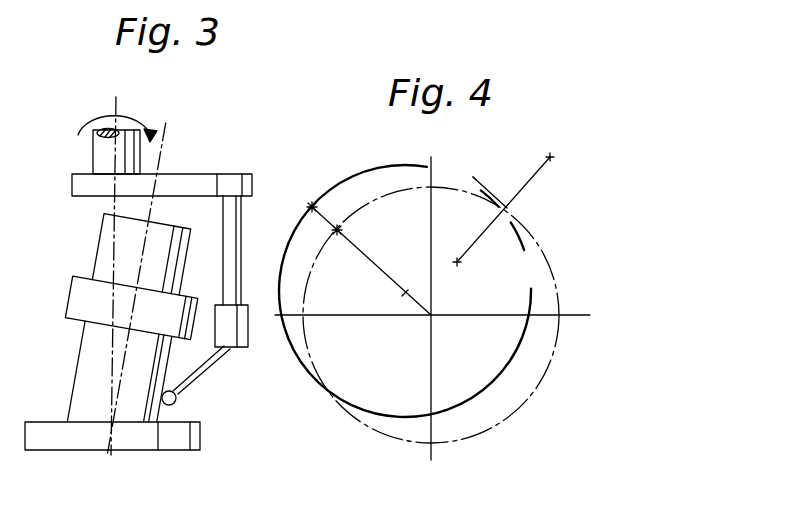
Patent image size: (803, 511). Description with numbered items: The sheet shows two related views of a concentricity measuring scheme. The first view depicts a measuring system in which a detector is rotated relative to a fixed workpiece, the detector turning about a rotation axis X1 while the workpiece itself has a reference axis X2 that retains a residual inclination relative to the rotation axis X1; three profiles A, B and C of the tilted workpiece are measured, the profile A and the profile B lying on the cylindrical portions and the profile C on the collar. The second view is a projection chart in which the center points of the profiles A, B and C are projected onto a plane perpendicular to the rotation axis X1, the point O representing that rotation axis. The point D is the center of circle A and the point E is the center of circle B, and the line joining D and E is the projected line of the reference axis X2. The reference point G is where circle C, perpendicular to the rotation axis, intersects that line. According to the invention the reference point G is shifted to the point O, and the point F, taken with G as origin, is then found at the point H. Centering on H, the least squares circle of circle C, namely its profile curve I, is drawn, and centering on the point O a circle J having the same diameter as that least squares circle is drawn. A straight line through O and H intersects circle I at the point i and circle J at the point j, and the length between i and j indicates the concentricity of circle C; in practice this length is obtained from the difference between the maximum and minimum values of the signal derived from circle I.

In FIG. 3, the rotation axis X1 is at (119, 264).
In FIG. 3, the reference axis of the workpiece X2 is at (143, 275).
In FIG. 3, the profile (circle A) A is at (185, 398).
In FIG. 3, the profile (circle B) B is at (153, 254).
In FIG. 3, the profile (circle C) C is at (210, 315).
In FIG. 4, the point O is at (432, 308).
In FIG. 4, the profile curve I (least squares circle of circle C) I is at (431, 315).
In FIG. 4, the circle J is at (405, 291).
In FIG. 4, the point H is at (371, 261).
In FIG. 4, the point j is at (320, 213).
In FIG. 4, the point i is at (345, 233).
In FIG. 4, the center of circle A D is at (500, 272).
In FIG. 4, the center of circle B E is at (549, 204).
In FIG. 4, the point F is at (467, 154).
In FIG. 4, the reference point G is at (535, 202).